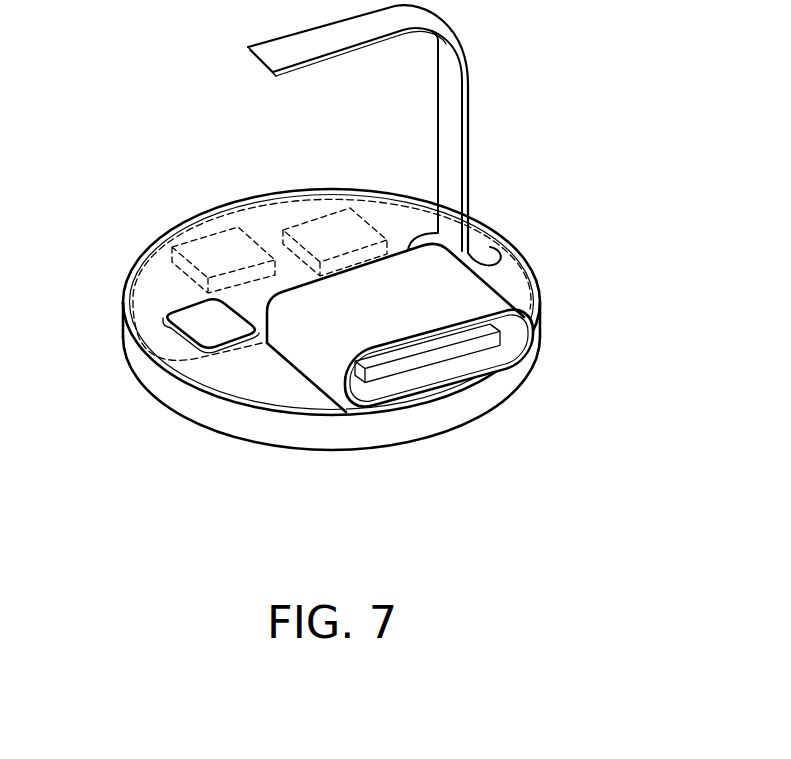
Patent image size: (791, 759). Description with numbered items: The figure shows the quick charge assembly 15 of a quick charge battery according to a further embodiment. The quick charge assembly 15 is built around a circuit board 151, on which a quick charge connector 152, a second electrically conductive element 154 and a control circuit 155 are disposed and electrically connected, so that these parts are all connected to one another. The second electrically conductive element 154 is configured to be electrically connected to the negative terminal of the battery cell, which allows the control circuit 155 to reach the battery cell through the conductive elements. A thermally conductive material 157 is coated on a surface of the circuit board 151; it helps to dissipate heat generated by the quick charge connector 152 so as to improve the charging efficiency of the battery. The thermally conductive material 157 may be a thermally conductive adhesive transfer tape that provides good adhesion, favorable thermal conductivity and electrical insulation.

The quick charge assembly 15 is at (347, 227).
The circuit board 151 is at (159, 378).
The quick charge connector 152 is at (487, 362).
The second electrically conductive element 154 is at (467, 102).
The control circuit 155 is at (217, 232).
The thermally conductive material 157 is at (162, 287).